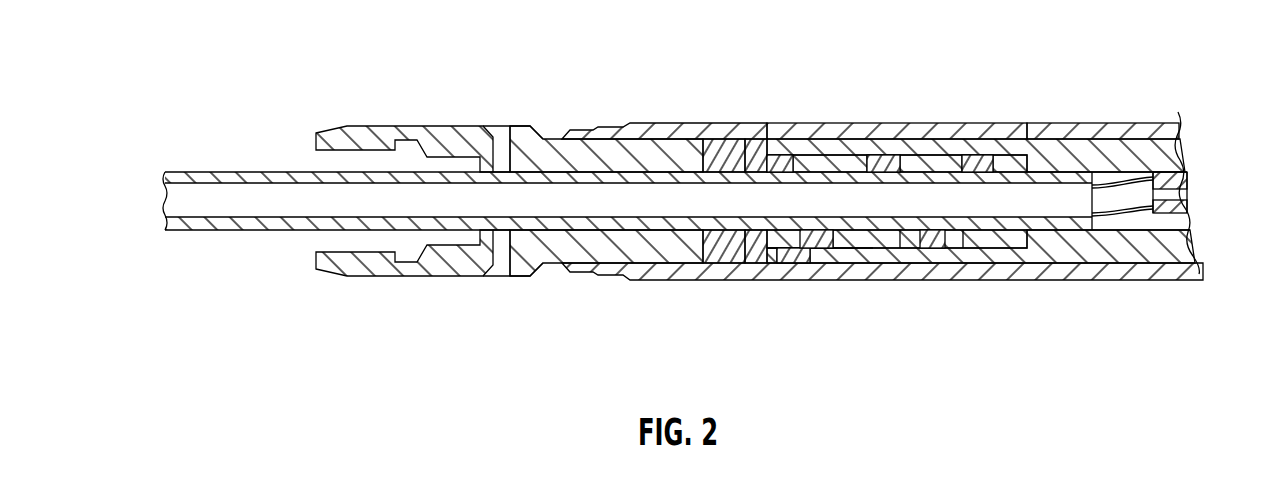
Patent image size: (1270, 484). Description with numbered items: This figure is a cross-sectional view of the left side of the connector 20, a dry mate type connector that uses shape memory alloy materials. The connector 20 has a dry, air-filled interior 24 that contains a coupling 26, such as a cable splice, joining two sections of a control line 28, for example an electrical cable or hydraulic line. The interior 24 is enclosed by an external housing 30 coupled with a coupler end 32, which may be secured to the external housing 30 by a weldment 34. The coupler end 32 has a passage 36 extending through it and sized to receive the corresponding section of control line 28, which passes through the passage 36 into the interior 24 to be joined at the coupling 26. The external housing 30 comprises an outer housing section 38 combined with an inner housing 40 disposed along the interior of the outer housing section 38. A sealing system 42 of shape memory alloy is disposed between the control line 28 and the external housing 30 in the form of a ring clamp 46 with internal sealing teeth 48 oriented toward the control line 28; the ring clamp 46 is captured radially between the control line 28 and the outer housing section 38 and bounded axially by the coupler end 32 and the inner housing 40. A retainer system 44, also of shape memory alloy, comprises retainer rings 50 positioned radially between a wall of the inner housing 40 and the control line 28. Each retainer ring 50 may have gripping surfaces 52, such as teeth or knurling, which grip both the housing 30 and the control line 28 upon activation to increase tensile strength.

The connector 20 is at (350, 60).
The interior 24 is at (1154, 226).
The coupling 26 is at (1191, 193).
The control line 28 is at (204, 233).
The external housing 30 is at (1007, 286).
The coupler end 32 is at (477, 121).
The weldment 34 is at (558, 137).
The passage 36 is at (316, 237).
The outer housing section 38 is at (1023, 130).
The inner housing 40 is at (1078, 135).
The sealing system 42 is at (728, 129).
The retainer system 44 is at (915, 141).
The ring clamp 46 is at (735, 235).
The internal sealing teeth 48 is at (759, 235).
The retainer ring 50 is at (873, 242).
The gripping surfaces 52 is at (791, 155).